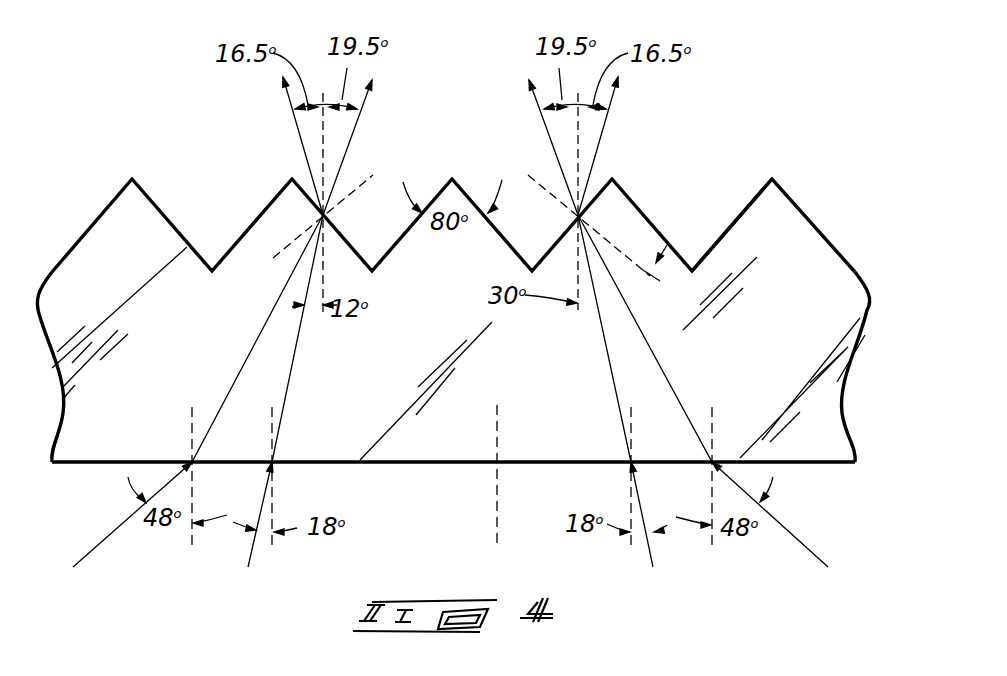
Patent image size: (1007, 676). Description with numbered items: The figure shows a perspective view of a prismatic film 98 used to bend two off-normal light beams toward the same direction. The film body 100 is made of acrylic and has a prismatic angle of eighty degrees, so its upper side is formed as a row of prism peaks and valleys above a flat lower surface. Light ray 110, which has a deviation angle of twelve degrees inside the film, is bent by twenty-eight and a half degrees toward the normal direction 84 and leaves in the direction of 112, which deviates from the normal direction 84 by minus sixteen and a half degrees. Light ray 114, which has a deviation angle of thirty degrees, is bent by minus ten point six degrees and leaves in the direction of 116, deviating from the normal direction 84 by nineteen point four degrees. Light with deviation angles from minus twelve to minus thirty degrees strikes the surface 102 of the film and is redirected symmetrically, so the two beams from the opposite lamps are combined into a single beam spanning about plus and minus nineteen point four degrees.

The prismatic film 98 is at (453, 236).
The prismatic light redirecting film 100 is at (813, 221).
The surface of the film 102 is at (737, 218).
The light ray 110 is at (292, 368).
The direction of propagation 112 is at (302, 140).
The light ray 114 is at (248, 357).
The direction of propagation 116 is at (352, 143).
The normal direction 84 is at (497, 415).